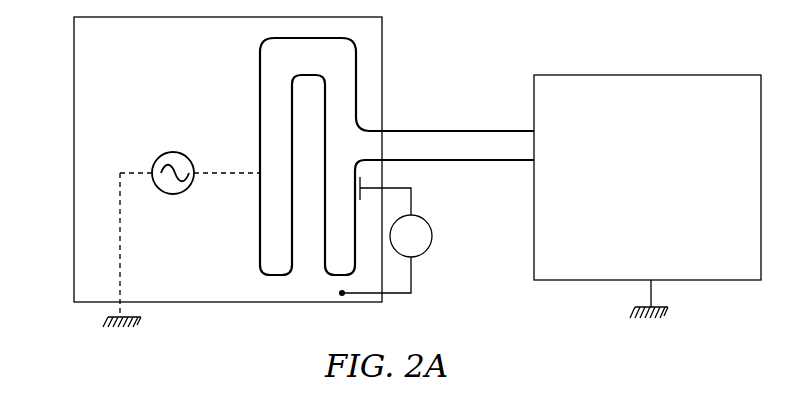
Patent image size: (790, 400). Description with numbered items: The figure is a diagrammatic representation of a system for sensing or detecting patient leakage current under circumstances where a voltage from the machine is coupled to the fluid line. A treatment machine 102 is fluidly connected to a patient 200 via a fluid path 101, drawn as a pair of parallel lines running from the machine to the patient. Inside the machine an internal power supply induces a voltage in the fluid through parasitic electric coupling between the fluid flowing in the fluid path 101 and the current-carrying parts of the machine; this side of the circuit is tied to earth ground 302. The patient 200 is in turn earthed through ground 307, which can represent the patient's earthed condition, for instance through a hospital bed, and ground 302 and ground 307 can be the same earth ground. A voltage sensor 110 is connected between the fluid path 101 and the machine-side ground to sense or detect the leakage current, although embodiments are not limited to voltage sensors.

The fluid path 101 is at (420, 131).
The treatment machine 102 is at (304, 167).
The voltage sensor 110 is at (432, 236).
The patient 200 is at (647, 177).
The ground 302 is at (106, 323).
The ground 307 is at (632, 315).